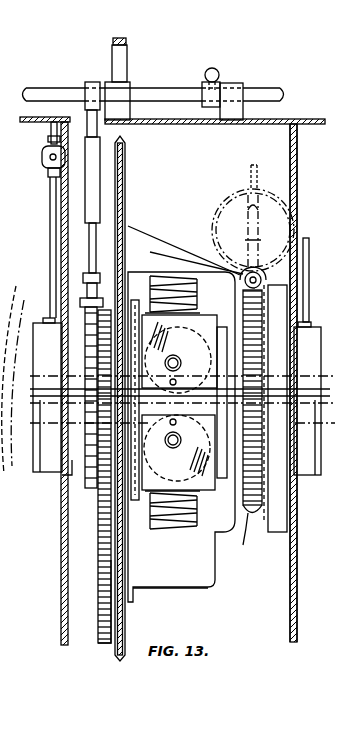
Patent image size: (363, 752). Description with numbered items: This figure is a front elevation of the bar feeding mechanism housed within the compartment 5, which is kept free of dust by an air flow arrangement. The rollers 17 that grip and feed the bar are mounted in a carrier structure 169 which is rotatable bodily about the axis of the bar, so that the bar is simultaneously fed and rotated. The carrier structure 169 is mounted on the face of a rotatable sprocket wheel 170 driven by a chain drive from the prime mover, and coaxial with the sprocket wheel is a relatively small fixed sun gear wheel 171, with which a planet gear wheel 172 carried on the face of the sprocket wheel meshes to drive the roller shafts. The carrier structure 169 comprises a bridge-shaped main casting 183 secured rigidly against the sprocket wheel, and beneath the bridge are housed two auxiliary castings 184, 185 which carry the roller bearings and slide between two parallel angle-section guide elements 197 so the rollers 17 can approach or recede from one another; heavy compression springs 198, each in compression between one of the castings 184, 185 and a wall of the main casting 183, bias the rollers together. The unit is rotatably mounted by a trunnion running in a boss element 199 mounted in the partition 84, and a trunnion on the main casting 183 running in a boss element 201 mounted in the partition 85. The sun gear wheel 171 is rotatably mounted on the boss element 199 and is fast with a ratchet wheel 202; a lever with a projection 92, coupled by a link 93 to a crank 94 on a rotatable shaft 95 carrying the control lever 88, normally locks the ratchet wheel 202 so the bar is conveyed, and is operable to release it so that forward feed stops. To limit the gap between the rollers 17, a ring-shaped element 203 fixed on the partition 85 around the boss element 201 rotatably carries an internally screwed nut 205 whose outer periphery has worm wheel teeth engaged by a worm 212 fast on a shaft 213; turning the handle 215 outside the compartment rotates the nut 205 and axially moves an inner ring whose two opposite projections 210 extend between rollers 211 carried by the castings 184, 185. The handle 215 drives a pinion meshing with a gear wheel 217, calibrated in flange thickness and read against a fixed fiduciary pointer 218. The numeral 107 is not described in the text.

The compartment 5 is at (292, 150).
The rollers 17 is at (200, 322).
The partition 84 is at (62, 206).
The partition 85 is at (297, 185).
The control lever 88 is at (219, 74).
The projection 92 is at (90, 303).
The link 93 is at (88, 243).
The crank 94 is at (85, 87).
The rotatable shaft 95 is at (153, 92).
The rod 107 is at (52, 190).
The carrier structure 169 is at (245, 559).
The sprocket wheel 170 is at (127, 150).
The sun gear wheel 171 is at (100, 494).
The planet gear wheel 172 is at (102, 608).
The main casting 183 is at (163, 265).
The auxiliary casting 184 is at (203, 313).
The auxiliary casting 185 is at (190, 492).
The guide elements 197 is at (213, 538).
The compression springs 198 is at (185, 290).
The boss element 199 is at (65, 478).
The boss element 201 is at (310, 340).
The ratchet wheel 202 is at (83, 485).
The ring-shaped element 203 is at (280, 527).
The nut 205 is at (262, 520).
The projections 210 is at (187, 401).
The rollers 211 is at (177, 401).
The worm 212 is at (243, 268).
The shaft 213 is at (196, 263).
The handle 215 is at (226, 212).
The gear wheel 217 is at (230, 224).
The fiduciary pointer 218 is at (250, 180).